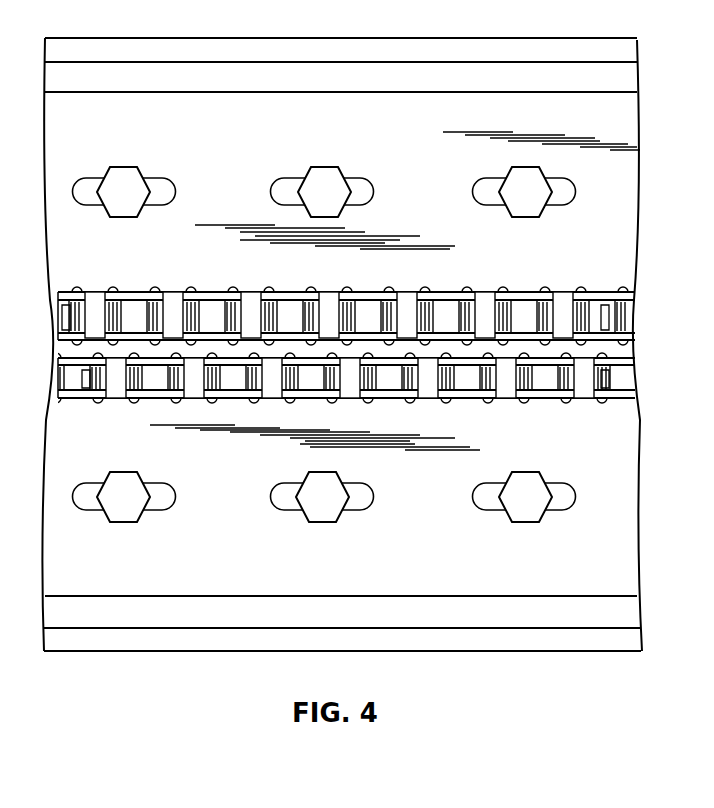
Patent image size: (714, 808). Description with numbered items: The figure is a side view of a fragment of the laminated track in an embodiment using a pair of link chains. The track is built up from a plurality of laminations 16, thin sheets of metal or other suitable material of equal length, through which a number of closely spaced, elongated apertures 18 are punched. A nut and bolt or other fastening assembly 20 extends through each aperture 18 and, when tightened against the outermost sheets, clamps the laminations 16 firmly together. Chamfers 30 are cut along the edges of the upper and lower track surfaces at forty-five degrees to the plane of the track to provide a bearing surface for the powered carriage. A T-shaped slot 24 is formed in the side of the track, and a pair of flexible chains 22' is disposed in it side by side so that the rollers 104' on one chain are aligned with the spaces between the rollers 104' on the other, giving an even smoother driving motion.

The laminations 16 is at (256, 78).
The chamfers 30 is at (458, 50).
The elongated apertures 18 is at (157, 185).
The fastening assembly 20 is at (125, 200).
The pair of flexible chains 22' is at (328, 348).
The T-shaped slot 24 is at (636, 300).
The rollers 104' is at (351, 352).